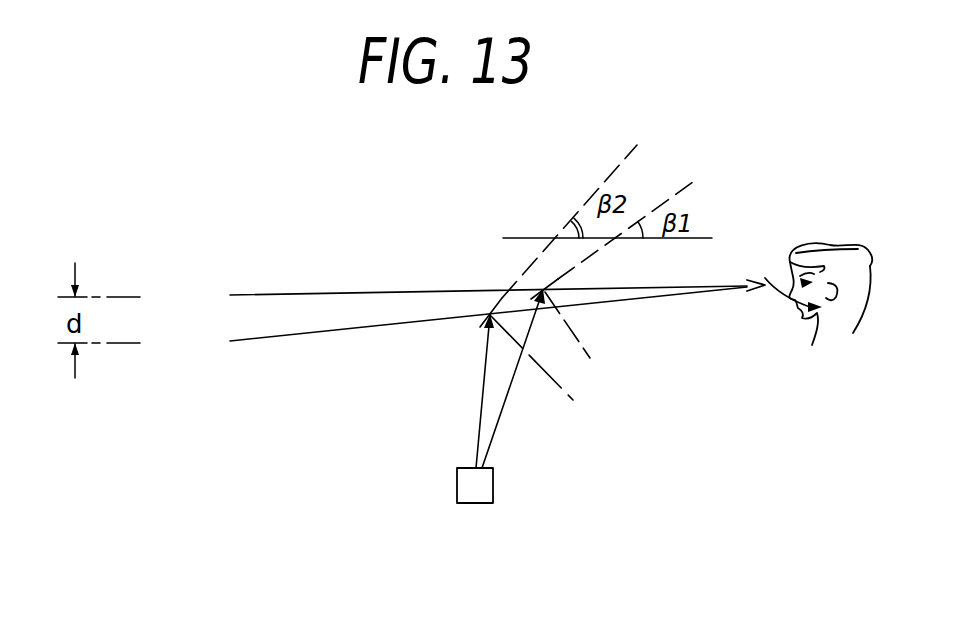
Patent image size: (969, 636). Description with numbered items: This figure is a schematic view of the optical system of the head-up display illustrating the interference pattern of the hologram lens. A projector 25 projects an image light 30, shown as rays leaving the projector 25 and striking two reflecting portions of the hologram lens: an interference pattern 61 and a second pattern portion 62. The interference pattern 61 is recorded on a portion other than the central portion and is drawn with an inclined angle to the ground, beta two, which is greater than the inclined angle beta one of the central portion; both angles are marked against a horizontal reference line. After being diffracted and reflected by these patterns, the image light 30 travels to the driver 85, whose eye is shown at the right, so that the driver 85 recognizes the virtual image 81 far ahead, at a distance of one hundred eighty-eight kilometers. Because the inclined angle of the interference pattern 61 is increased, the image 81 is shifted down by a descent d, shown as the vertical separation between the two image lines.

The projector 25 is at (473, 503).
The image light 30 is at (480, 415).
The interference pattern 61 is at (558, 279).
The mirror 62 is at (482, 323).
The virtual image 81 is at (167, 268).
The driver 85 is at (870, 266).